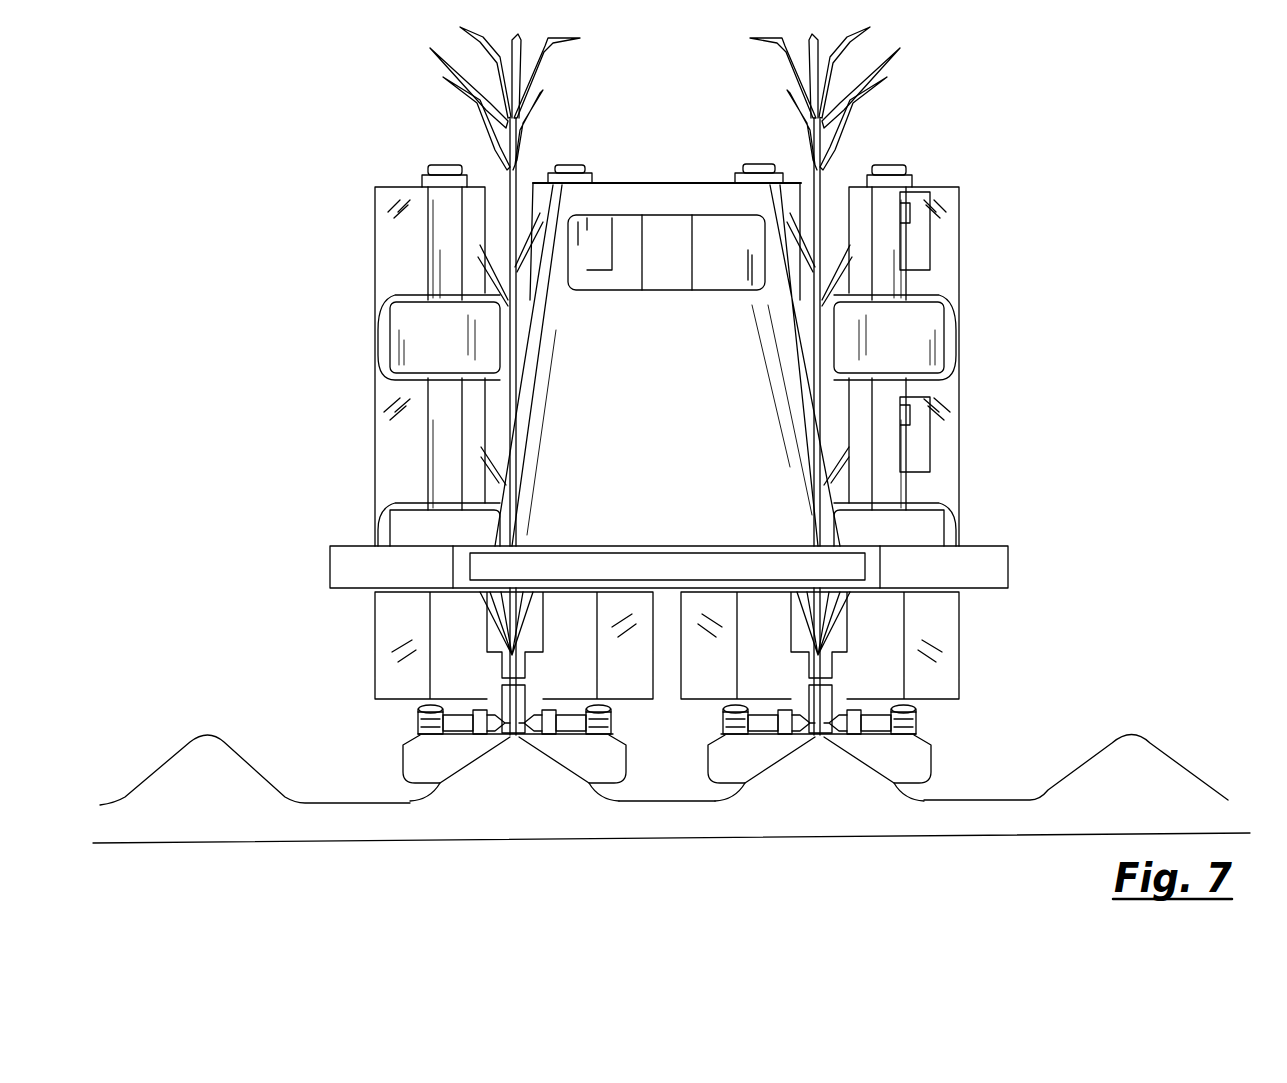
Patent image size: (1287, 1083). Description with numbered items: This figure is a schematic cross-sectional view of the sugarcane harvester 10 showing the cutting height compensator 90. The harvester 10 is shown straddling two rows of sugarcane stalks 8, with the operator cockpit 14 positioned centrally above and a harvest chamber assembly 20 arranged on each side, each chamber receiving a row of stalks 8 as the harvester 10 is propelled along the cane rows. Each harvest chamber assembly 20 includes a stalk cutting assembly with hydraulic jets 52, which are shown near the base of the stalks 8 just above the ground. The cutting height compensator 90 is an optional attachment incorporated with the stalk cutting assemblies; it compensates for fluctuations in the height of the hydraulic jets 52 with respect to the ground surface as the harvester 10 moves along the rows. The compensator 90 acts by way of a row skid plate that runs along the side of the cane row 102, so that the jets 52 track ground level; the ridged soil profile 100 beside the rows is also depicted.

The stalks 8 is at (498, 70).
The sugarcane harvester 10 is at (665, 478).
The operator cockpit 14 is at (619, 195).
The harvest chamber assembly 20 is at (388, 250).
The hydraulic jets 52 is at (453, 723).
The cutting height compensator 90 is at (425, 722).
The soil ridge 100 is at (1120, 757).
The cane row 102 is at (818, 742).